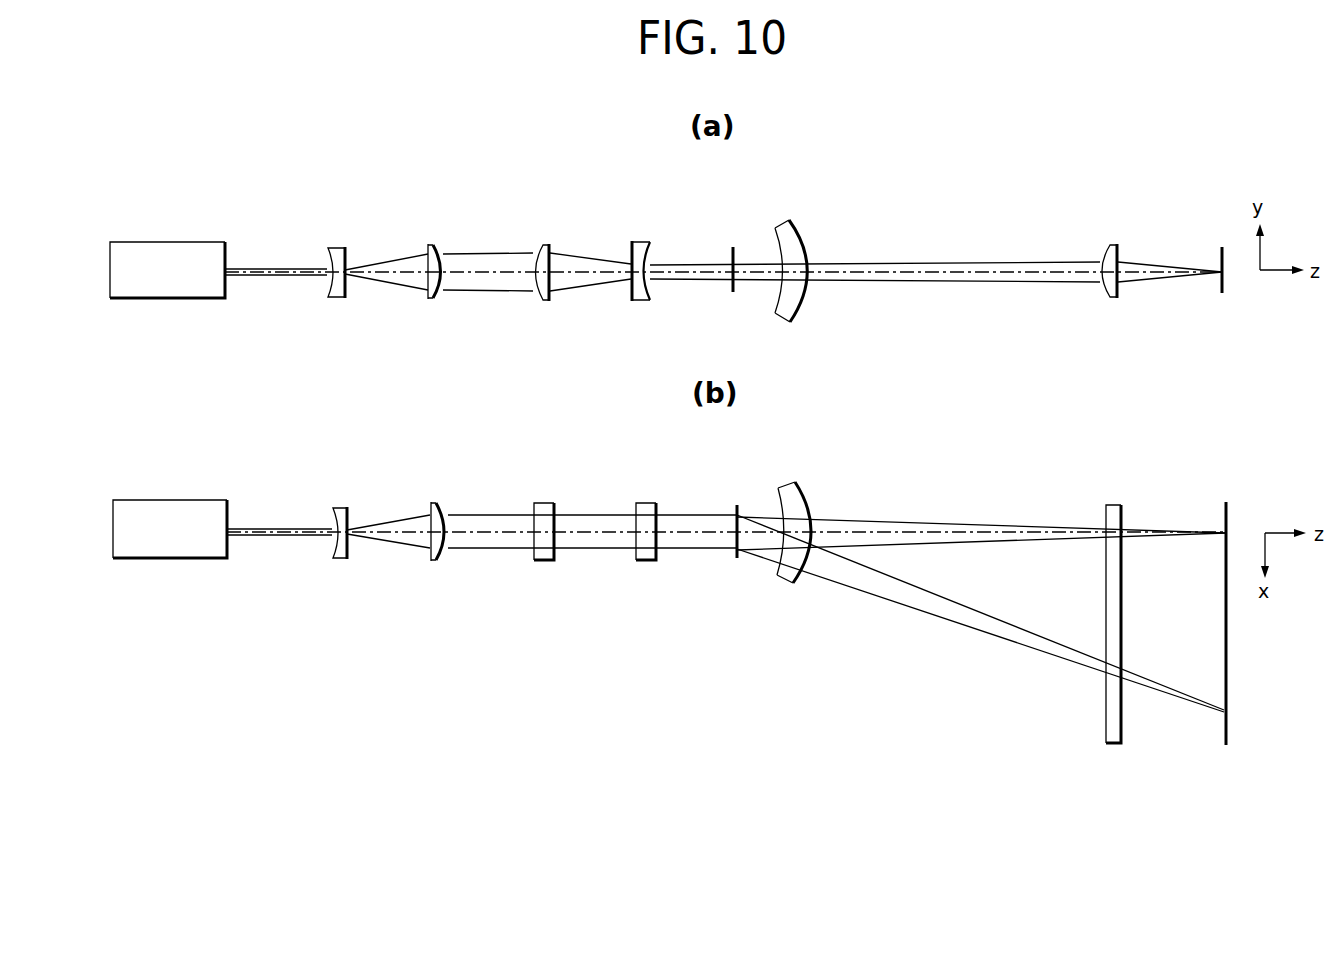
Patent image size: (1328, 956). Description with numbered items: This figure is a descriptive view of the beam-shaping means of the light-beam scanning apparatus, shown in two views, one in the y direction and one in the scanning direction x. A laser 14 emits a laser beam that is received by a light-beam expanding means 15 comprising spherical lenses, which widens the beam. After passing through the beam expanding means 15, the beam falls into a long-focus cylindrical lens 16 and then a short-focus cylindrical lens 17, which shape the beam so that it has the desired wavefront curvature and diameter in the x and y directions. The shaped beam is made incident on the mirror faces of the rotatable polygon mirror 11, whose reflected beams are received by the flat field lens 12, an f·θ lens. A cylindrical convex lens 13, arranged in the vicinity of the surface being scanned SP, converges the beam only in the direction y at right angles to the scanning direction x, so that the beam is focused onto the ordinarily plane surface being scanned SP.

The laser 14 is at (189, 242).
The light-beam expanding means 15 is at (443, 304).
The long-focus cylindrical lens 16 is at (547, 245).
The short-focus cylindrical lens 17 is at (640, 242).
The rotatable polygon mirror 11 is at (733, 250).
The flat field lens 12 is at (788, 232).
The cylindrical convex lens 13 is at (1103, 285).
The surface being scanned SP is at (1219, 285).